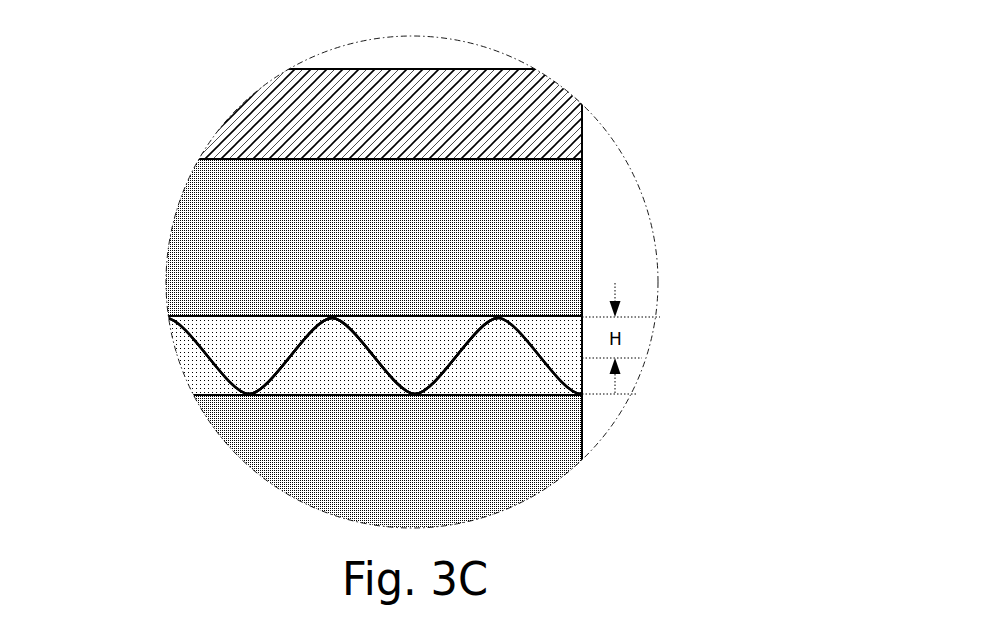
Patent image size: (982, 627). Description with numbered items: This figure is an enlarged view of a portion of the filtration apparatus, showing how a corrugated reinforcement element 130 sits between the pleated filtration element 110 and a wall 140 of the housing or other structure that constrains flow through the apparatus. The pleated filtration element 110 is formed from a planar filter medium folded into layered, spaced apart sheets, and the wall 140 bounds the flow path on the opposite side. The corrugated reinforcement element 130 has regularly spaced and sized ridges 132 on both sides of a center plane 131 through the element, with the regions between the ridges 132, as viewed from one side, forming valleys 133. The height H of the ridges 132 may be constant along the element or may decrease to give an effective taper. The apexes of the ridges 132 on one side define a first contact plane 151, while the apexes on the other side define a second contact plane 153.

The walls 140 is at (487, 70).
The pleated filtration element 110 is at (582, 190).
The corrugated reinforcement element 130 is at (215, 377).
The ridges 132 is at (458, 304).
The valleys 133 is at (235, 332).
The first contact plane 151 is at (650, 317).
The center plane 131 is at (638, 360).
The second contact plane 153 is at (608, 397).